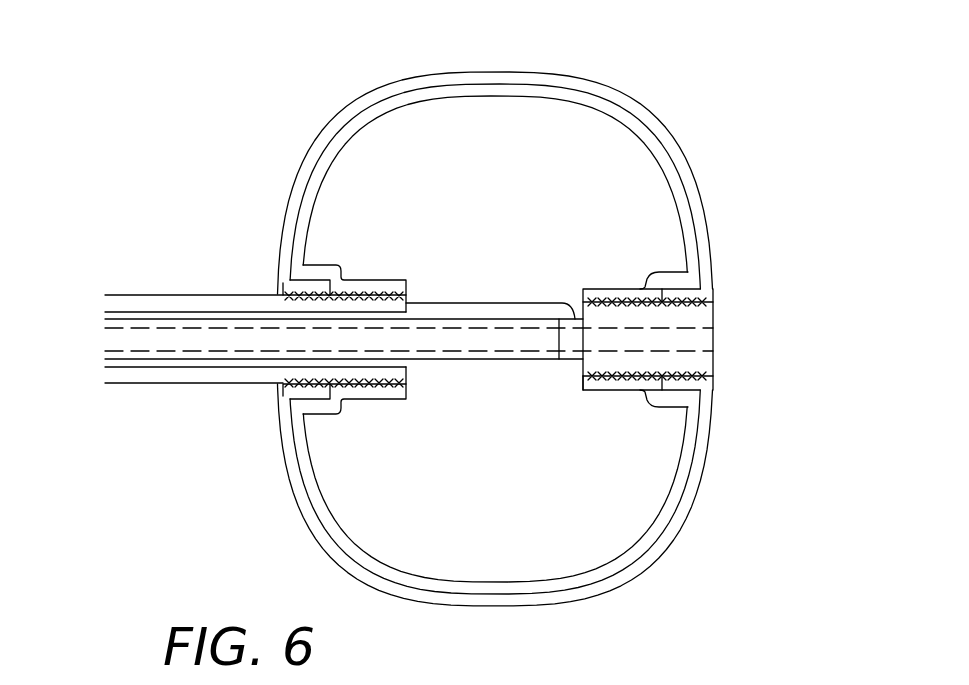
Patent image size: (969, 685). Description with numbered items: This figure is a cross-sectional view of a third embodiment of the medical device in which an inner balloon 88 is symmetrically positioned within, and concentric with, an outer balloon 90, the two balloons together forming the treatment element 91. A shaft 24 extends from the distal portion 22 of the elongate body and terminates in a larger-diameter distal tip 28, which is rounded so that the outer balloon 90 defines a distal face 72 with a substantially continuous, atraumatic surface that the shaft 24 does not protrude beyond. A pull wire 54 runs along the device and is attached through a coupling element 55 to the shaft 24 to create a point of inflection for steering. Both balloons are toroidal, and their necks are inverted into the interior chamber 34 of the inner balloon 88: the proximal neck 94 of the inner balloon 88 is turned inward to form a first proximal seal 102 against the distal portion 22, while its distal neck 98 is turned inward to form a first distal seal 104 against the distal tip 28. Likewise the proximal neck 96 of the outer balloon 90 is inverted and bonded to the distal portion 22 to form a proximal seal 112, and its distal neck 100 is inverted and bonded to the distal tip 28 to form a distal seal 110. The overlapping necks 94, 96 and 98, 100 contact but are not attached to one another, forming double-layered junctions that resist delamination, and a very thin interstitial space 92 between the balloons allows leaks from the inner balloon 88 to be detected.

The distal portion 22 is at (121, 294).
The shaft 24 is at (493, 362).
The distal tip 28 is at (705, 317).
The interior chamber 34 is at (473, 545).
The pull wire 54 is at (453, 303).
The coupling element 55 is at (565, 357).
The distal face 72 is at (779, 76).
The inner balloon 88 is at (554, 97).
The outer balloon 90 is at (347, 112).
The treatment element 91 is at (655, 101).
The interstitial space 92 is at (486, 82).
The proximal neck 94 is at (416, 276).
The proximal neck 96 is at (279, 293).
The distal neck 98 is at (668, 250).
The distal neck 100 is at (698, 385).
The first proximal seal 102 is at (408, 375).
The first distal seal 104 is at (583, 377).
The distal seal 110 is at (698, 302).
The proximal seal 112 is at (281, 384).